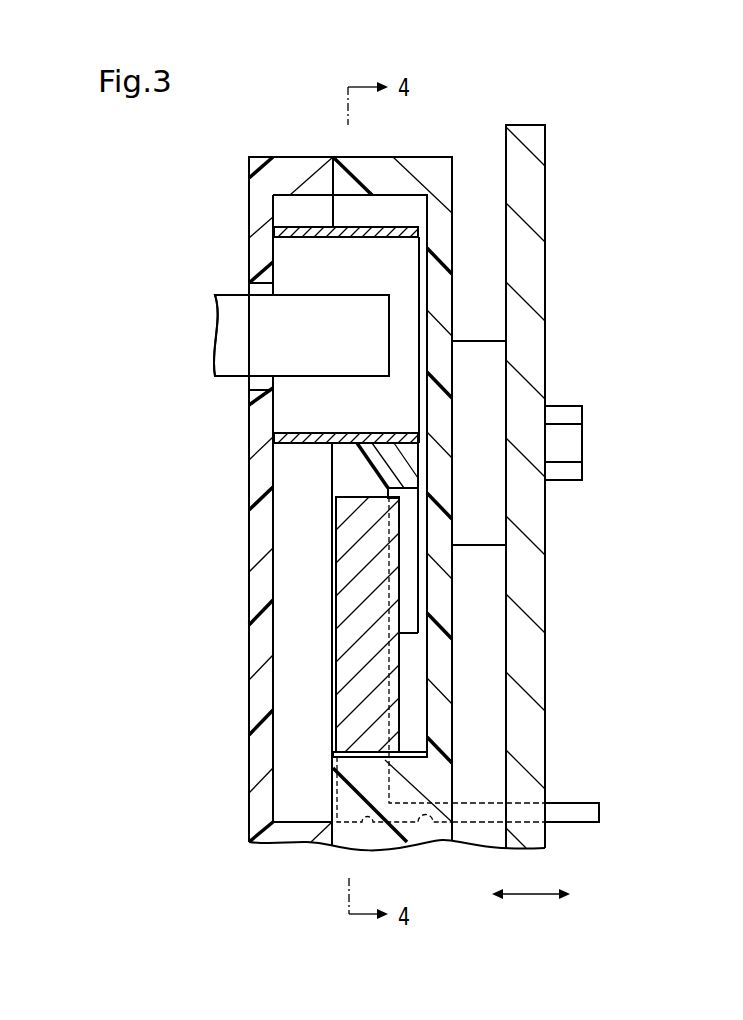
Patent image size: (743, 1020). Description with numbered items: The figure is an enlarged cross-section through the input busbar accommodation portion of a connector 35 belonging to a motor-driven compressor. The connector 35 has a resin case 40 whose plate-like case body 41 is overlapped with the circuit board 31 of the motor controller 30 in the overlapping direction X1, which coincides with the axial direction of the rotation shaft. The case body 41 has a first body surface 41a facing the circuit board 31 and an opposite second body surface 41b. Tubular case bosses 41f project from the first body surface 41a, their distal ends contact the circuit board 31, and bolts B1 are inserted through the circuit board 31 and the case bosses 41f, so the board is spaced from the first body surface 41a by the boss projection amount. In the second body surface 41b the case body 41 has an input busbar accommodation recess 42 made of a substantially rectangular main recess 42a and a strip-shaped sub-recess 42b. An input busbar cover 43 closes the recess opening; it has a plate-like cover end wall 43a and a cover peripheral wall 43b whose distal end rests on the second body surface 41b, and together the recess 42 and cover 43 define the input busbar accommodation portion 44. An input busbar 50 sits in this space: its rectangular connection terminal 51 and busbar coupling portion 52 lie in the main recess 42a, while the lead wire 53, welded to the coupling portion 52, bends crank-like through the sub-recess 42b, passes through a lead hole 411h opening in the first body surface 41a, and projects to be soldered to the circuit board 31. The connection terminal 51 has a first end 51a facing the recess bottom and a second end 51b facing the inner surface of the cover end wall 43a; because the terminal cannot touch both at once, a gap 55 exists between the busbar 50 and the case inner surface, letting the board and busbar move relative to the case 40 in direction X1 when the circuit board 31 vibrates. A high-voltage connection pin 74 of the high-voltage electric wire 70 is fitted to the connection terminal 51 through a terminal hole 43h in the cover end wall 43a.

The motor controller 30 is at (552, 117).
The circuit board 31 is at (540, 193).
The connector 35 is at (246, 151).
The case 40 is at (430, 163).
The case body 41 is at (446, 670).
The first body surface 41a is at (453, 601).
The second body surface 41b is at (330, 175).
The case boss 41f is at (494, 383).
The input busbar accommodation recess 42 is at (382, 200).
The main recess 42a is at (348, 197).
The sub-recess 42b is at (373, 823).
The input busbar cover 43 is at (249, 703).
The cover end wall 43a is at (249, 651).
The cover peripheral wall 43b is at (297, 843).
The terminal hole 43h is at (250, 289).
The input busbar accommodation portion 44 is at (298, 575).
The input busbar 50 is at (290, 226).
The connection terminal 51 is at (313, 444).
The first end 51a is at (420, 262).
The second end 51b is at (272, 412).
The busbar coupling portion 52 is at (420, 523).
The lead wire 53 is at (583, 805).
The gap 55 is at (422, 283).
The high-voltage electric wire 70 is at (182, 374).
The high-voltage connection pin 74 is at (215, 346).
The lead hole 411h is at (433, 823).
The bolt B1 is at (577, 441).
The overlapping direction X1 is at (530, 896).